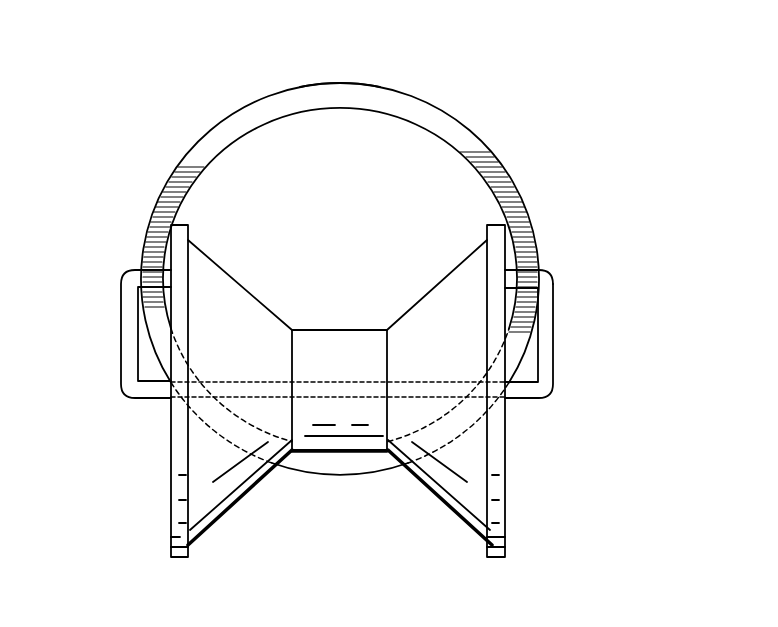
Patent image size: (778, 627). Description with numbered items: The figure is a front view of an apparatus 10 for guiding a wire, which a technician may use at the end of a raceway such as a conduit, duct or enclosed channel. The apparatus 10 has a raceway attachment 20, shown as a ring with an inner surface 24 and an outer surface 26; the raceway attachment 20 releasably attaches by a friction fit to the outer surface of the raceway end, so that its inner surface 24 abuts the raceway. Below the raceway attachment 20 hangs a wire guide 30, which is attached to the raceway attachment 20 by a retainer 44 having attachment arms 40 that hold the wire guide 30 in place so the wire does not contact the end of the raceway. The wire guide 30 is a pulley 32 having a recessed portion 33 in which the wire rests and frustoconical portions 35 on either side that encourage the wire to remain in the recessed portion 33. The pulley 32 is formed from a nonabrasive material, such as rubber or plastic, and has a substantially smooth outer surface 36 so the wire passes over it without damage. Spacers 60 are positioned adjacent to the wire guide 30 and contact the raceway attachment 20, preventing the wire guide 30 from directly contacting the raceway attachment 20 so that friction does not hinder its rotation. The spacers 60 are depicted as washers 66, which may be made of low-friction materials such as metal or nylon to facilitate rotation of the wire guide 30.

The apparatus for guiding a wire 10 is at (451, 65).
The raceway attachment 20 is at (259, 104).
The inner surface 24 is at (400, 124).
The outer surface 26 is at (313, 84).
The wire guide 30 is at (470, 520).
The pulley 32 is at (223, 502).
The recessed portion 33 is at (326, 338).
The frustoconical portions 35 is at (412, 468).
The outer surface 36 is at (433, 490).
The attachment arms 40 is at (121, 338).
The retainer 44 is at (556, 279).
The spacers 60 is at (170, 452).
The washers 66 is at (170, 505).